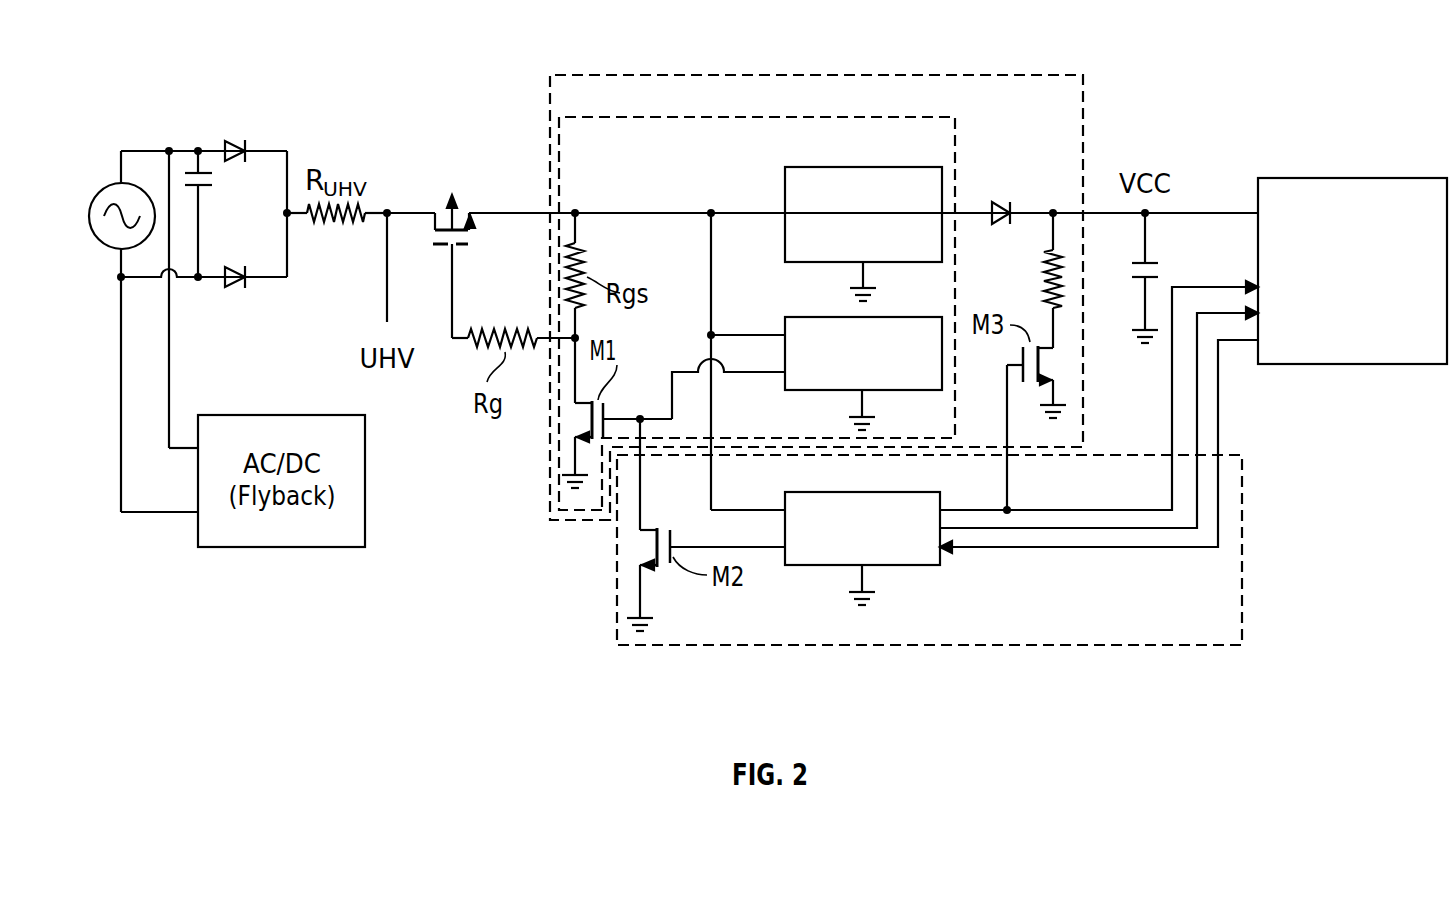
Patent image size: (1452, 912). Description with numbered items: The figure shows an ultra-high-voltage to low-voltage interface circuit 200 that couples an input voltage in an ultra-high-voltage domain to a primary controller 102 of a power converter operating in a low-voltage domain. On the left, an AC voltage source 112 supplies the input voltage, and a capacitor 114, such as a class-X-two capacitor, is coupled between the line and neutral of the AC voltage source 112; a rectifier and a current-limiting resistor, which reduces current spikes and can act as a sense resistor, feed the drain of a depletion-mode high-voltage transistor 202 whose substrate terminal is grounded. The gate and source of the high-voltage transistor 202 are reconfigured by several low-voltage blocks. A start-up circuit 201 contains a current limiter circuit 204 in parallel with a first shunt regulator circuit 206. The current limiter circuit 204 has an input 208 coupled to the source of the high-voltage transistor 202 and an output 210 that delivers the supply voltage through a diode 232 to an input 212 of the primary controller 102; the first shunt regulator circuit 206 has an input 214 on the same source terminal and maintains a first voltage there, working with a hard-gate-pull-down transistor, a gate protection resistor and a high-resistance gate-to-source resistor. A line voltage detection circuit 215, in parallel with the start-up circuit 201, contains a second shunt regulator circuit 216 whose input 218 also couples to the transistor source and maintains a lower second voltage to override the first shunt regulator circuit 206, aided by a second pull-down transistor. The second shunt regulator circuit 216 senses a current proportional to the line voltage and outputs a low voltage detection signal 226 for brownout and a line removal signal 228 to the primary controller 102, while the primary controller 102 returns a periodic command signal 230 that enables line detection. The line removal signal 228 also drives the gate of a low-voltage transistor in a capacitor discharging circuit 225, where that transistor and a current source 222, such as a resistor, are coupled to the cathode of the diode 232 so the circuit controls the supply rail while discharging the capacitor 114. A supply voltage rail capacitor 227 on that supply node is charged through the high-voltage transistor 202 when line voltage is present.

The primary controller 102 is at (1388, 177).
The AC voltage source 112 is at (118, 183).
The capacitor 114 is at (190, 168).
The UHV-LV interface circuit 200 is at (1088, 30).
The start-up circuit 201 is at (903, 115).
The high-voltage transistor 202 is at (442, 222).
The current limiter circuit 204 is at (885, 167).
The first shunt regulator circuit 206 is at (885, 317).
The input 208 is at (776, 222).
The output 210 is at (970, 212).
The input 212 is at (1257, 210).
The input 214 is at (785, 345).
The line voltage detection circuit 215 is at (1123, 645).
The second shunt regulator circuit 216 is at (900, 492).
The input 218 is at (785, 500).
The current source 222 is at (1047, 250).
The capacitor discharging circuit 225 is at (1033, 75).
The low voltage detection signal 226 is at (1197, 465).
The supply voltage rail VCC capacitor 227 is at (1153, 257).
The line removal signal 228 is at (1172, 342).
The signal 230 is at (1218, 540).
The diode 232 is at (1003, 203).